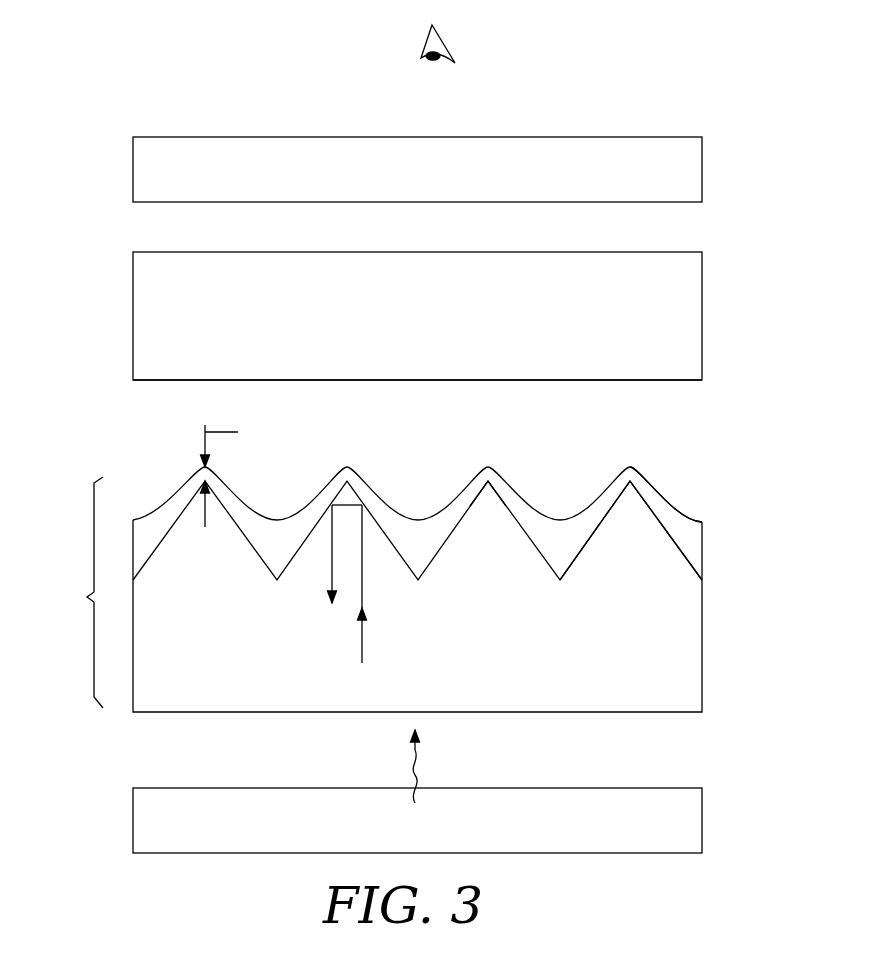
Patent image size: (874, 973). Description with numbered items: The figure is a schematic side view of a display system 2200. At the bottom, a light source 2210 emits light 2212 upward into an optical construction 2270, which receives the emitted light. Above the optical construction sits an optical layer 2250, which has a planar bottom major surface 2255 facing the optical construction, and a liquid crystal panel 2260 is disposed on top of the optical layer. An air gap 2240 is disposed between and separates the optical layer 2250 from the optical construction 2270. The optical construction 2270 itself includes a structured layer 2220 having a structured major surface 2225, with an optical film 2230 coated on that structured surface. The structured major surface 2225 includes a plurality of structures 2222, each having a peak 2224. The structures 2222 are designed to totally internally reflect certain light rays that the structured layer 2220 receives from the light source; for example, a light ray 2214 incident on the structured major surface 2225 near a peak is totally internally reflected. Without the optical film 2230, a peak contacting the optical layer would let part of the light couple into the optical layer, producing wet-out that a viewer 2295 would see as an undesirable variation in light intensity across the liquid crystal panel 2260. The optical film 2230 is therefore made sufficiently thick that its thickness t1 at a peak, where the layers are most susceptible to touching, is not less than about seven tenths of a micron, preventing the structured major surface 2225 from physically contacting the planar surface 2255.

The display system 2200 is at (168, 70).
The viewer 2295 is at (440, 42).
The liquid crystal panel 2260 is at (688, 167).
The optical layer 2250 is at (688, 324).
The planar bottom major surface 2255 is at (668, 383).
The air gap 2240 is at (673, 452).
The optical film 2230 is at (680, 522).
The structured major surface 2225 is at (683, 556).
The structures 2222 is at (632, 540).
The peak 2224 is at (488, 492).
The structured layer 2220 is at (688, 660).
The light ray 2214 is at (362, 650).
The thickness of optical film t1 is at (234, 471).
The light 2212 is at (415, 770).
The light source 2210 is at (688, 817).
The optical construction 2270 is at (65, 592).